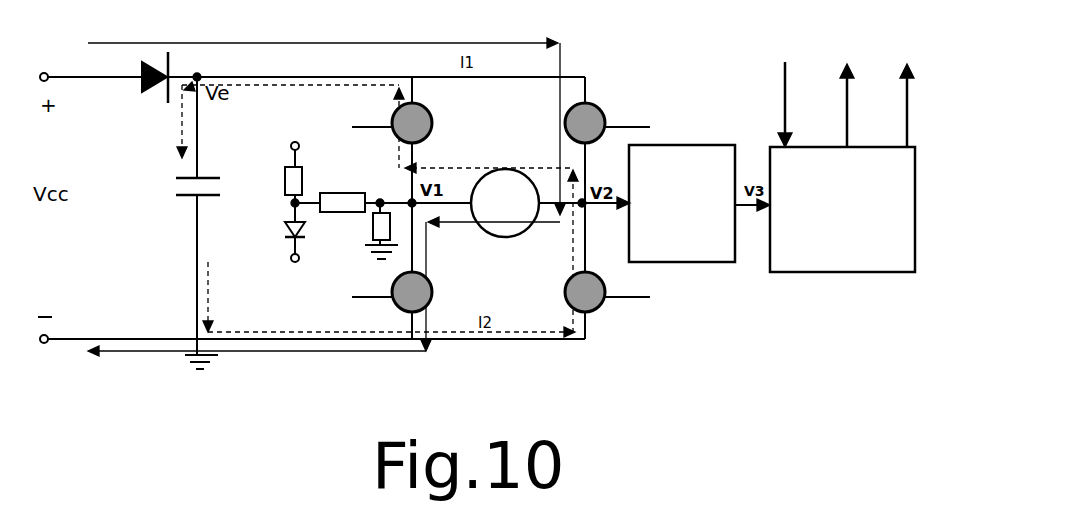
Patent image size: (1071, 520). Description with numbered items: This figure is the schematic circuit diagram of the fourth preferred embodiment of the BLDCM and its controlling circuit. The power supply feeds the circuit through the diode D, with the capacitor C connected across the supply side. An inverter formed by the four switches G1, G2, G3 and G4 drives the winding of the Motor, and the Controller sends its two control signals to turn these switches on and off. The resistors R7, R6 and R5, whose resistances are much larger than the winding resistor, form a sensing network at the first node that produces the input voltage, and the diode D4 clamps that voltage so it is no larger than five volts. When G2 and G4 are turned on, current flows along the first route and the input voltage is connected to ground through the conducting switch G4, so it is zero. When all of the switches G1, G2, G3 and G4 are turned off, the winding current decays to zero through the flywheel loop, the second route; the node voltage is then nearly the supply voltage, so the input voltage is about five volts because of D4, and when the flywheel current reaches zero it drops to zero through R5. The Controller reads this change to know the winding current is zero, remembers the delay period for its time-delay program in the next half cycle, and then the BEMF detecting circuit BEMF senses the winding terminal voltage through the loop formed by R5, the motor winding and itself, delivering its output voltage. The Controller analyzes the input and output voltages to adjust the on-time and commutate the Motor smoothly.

The diode D is at (137, 75).
The capacitor C is at (184, 192).
The switch G1 is at (406, 123).
The switch G2 is at (595, 123).
The switch G3 is at (596, 292).
The switch G4 is at (406, 292).
The motor Motor is at (505, 203).
The resistor R7 is at (280, 162).
The resistor R6 is at (342, 194).
The resistor R5 is at (372, 231).
The diode D4 is at (283, 247).
The BEMF detecting circuit BEMF is at (682, 203).
The controller Controller is at (833, 166).